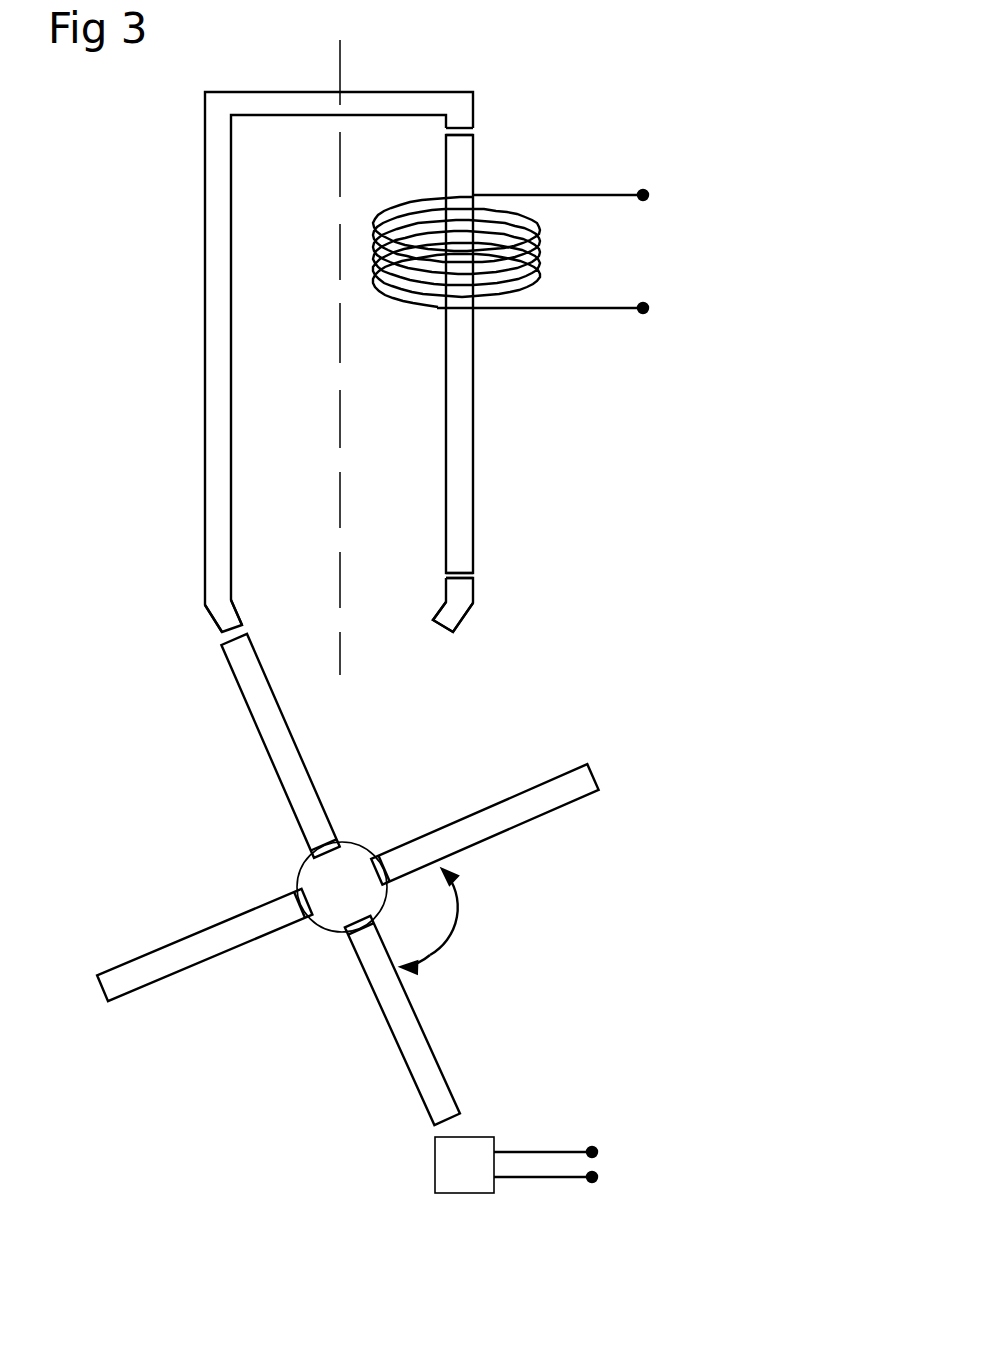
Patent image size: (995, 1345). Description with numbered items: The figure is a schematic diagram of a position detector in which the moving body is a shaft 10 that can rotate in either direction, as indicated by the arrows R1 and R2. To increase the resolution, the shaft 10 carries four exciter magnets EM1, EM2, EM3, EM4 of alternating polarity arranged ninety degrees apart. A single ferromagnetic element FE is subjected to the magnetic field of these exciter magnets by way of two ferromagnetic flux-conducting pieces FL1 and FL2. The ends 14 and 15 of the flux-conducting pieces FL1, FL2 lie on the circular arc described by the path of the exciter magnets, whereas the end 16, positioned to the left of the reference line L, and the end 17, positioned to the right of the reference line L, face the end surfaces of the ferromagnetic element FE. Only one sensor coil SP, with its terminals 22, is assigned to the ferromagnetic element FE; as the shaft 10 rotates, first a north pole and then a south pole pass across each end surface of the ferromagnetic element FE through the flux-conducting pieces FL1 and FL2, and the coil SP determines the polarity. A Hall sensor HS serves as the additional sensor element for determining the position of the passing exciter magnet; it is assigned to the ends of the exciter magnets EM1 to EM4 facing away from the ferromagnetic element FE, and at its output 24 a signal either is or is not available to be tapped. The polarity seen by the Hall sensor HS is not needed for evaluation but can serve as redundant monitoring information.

The reference line L is at (342, 68).
The ferromagnetic flux-conducting piece FL1 is at (218, 410).
The end of flux-conducting piece 14 is at (230, 630).
The end of flux-conducting piece 16 is at (463, 123).
The ferromagnetic element FE is at (462, 400).
The end of flux-conducting piece 17 is at (473, 577).
The ferromagnetic flux-conducting piece FL2 is at (457, 605).
The end of flux-conducting piece 15 is at (448, 632).
The sensor coil SP is at (542, 250).
The coil terminals 22 is at (653, 197).
The shaft 10 is at (338, 880).
The exciter magnet EM1 is at (280, 732).
The exciter magnet EM2 is at (475, 827).
The exciter magnet EM3 is at (398, 1010).
The exciter magnet EM4 is at (180, 955).
The rotation direction R1 is at (437, 979).
The rotation direction R2 is at (469, 912).
The Hall sensor HS is at (462, 1167).
The output 24 is at (602, 1152).